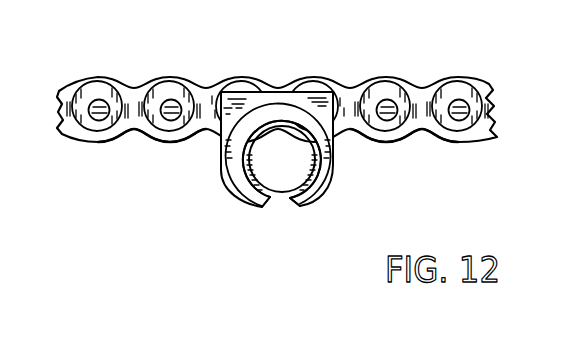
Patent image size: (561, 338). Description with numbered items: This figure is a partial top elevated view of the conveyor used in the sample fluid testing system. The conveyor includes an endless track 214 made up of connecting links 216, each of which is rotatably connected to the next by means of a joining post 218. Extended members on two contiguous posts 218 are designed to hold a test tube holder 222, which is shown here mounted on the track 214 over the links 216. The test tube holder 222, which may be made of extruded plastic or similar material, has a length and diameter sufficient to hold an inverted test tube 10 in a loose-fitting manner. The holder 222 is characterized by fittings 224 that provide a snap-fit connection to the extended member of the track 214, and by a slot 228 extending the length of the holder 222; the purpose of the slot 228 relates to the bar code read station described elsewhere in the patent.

The test tube 10 is at (270, 157).
The endless track 214 is at (134, 89).
The connecting links 216 is at (166, 88).
The joining post 218 is at (97, 117).
The test tube holder 222 is at (316, 170).
The fittings 224 is at (228, 98).
The slot 228 is at (283, 207).